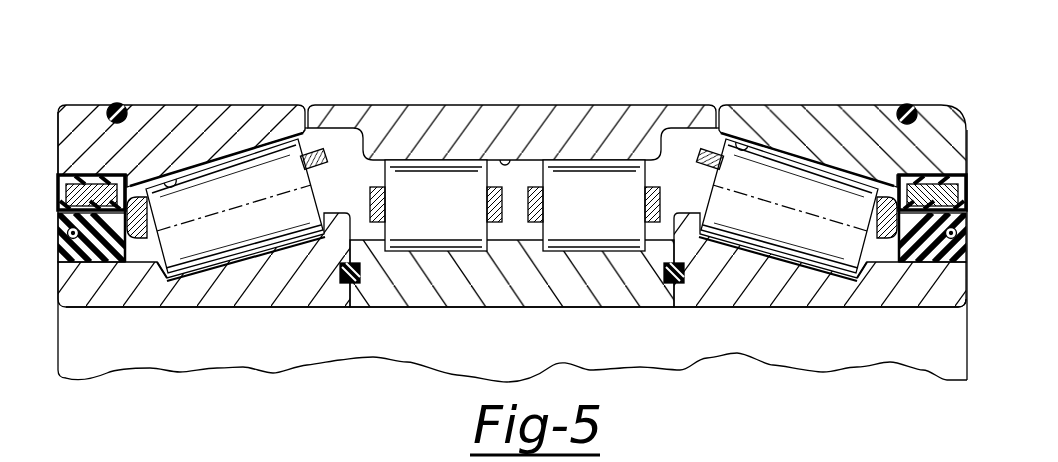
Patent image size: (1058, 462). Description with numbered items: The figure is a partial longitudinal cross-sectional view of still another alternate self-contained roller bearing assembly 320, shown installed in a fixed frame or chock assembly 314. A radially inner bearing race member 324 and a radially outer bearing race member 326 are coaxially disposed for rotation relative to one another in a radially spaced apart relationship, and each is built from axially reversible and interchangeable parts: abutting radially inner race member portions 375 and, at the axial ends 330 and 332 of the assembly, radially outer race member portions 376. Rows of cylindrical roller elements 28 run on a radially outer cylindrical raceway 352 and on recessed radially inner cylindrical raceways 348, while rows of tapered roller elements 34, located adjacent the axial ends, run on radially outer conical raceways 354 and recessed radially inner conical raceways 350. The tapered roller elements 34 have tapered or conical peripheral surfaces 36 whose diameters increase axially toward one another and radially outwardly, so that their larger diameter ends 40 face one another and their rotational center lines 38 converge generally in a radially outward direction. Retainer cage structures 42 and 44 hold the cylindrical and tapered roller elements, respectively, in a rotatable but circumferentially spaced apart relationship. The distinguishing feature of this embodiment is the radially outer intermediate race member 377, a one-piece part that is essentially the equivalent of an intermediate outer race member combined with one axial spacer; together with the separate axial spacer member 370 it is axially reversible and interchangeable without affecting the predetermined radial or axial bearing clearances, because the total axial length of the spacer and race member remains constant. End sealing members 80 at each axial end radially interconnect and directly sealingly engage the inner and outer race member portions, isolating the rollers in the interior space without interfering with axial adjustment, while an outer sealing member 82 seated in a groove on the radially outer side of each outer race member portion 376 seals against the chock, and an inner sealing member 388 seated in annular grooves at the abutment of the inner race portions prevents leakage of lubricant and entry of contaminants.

The cylindrical roller elements 28 is at (425, 182).
The tapered roller elements 34 is at (240, 170).
The tapered or conical peripheral surfaces 36 is at (253, 252).
The rotational center lines 38 is at (248, 223).
The larger diameter ends 40 is at (305, 247).
The retainer cage structures 42 is at (377, 224).
The retainer cage structures 44 is at (330, 152).
The end sealing members 80 is at (100, 242).
The outer sealing member 82 is at (124, 105).
The inner raceway 314 is at (237, 258).
The alternate bearing assembly 320 is at (848, 40).
The shaft 324 is at (138, 312).
The outer ring 326 is at (287, 102).
The housing end 330 is at (57, 110).
The housing end 332 is at (968, 295).
The spool hub 348 is at (422, 244).
The cone rib 350 is at (183, 262).
The lubrication port 352 is at (505, 162).
The lubrication passage 354 is at (167, 182).
The axial spacer member 370 is at (700, 108).
The inner spacer 375 is at (543, 300).
The outer ring end section 376 is at (210, 115).
The radially outer intermediate race member 377 is at (582, 118).
The O-ring 388 is at (350, 284).